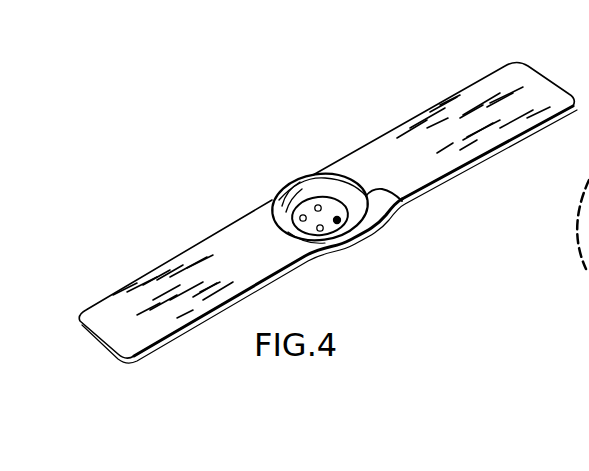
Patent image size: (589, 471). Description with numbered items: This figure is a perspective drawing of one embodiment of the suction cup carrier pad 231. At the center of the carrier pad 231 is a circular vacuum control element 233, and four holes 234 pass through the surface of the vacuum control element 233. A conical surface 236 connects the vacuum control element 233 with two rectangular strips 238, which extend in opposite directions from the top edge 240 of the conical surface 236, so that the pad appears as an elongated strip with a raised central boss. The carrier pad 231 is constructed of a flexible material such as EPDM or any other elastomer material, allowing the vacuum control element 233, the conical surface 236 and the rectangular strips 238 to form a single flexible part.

The suction cup carrier pad 231 is at (328, 216).
The vacuum control element 233 is at (318, 204).
The holes 234 is at (339, 223).
The conical surface 236 is at (283, 209).
The rectangular strips 238 is at (496, 88).
The top edge 240 is at (403, 200).